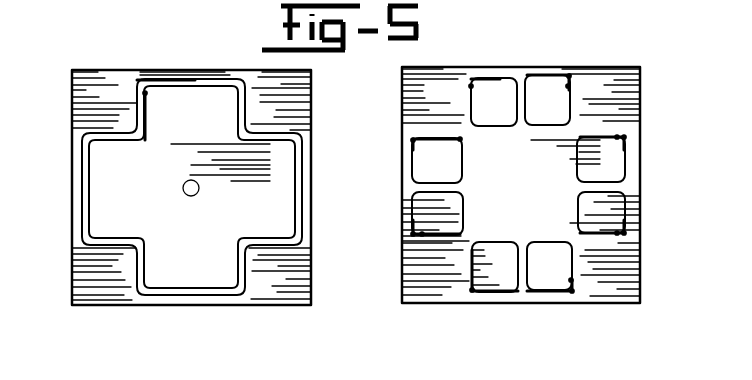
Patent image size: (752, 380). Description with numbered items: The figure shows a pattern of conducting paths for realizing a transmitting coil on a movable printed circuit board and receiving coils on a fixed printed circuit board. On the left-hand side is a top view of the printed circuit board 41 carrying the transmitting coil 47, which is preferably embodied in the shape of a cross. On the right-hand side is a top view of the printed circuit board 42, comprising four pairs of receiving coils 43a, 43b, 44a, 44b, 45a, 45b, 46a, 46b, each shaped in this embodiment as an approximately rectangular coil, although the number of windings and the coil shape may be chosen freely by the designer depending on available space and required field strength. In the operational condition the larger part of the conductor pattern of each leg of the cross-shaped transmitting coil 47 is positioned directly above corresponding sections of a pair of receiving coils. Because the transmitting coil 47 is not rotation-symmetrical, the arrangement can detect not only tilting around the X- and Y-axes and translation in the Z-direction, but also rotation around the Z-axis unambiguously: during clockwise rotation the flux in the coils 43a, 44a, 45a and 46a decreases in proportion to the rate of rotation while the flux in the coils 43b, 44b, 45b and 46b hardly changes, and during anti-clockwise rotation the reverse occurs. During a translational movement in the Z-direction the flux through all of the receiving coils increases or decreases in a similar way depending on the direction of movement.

The printed circuit board 41 is at (290, 290).
The printed circuit board 42 is at (606, 290).
The receiving coil 43a is at (625, 160).
The receiving coil 43b is at (625, 212).
The receiving coil 44a is at (498, 78).
The receiving coil 44b is at (549, 75).
The receiving coil 45a is at (412, 216).
The receiving coil 45b is at (412, 158).
The receiving coil 46a is at (550, 290).
The receiving coil 46b is at (498, 292).
The transmitting coil 47 is at (83, 188).